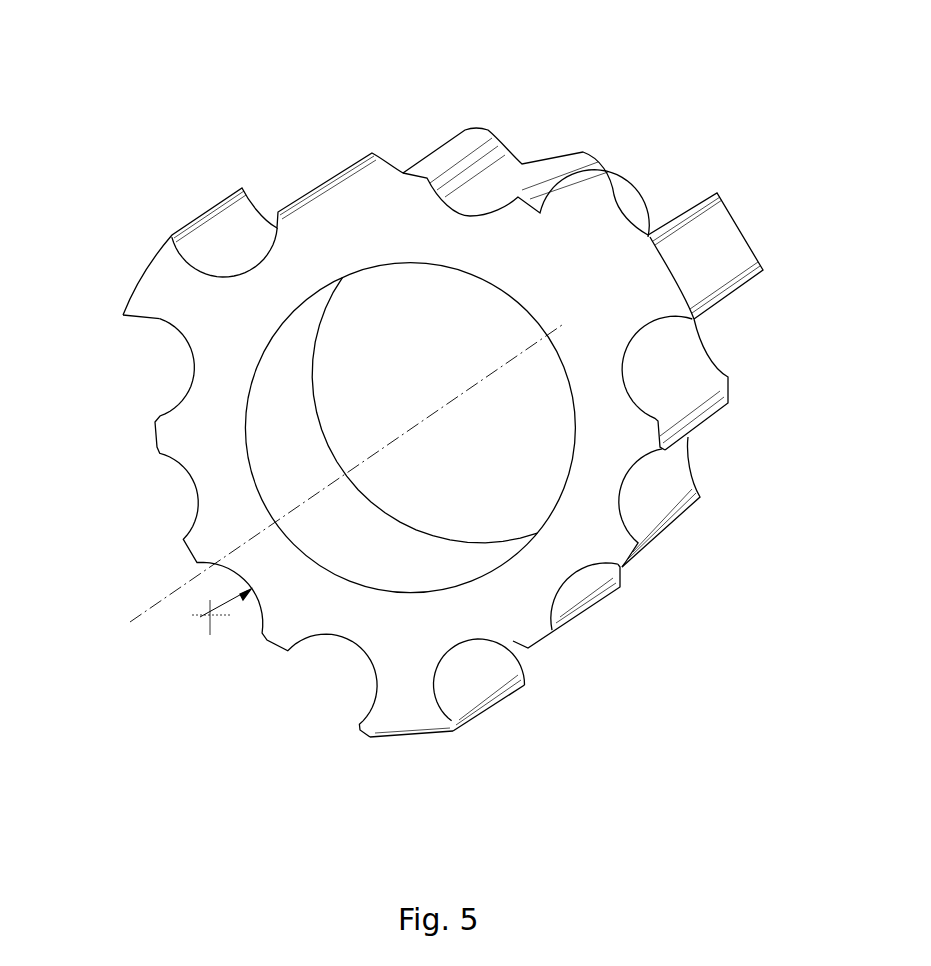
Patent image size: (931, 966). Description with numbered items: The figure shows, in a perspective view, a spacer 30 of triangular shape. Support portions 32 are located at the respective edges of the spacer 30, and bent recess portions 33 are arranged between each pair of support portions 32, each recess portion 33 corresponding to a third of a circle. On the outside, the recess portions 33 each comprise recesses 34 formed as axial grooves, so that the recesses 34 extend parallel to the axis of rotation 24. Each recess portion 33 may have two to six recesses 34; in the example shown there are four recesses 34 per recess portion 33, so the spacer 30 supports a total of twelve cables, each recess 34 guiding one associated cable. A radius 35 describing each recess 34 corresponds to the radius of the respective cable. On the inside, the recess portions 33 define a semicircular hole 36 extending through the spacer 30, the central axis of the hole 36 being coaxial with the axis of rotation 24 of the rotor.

The spacer 30 is at (257, 137).
The support portions 32 is at (152, 285).
The recess portions 33 is at (230, 503).
The recesses 34 is at (627, 360).
The radius 35 is at (237, 598).
The semicircular hole 36 is at (352, 410).
The axis of rotation 24 is at (166, 598).